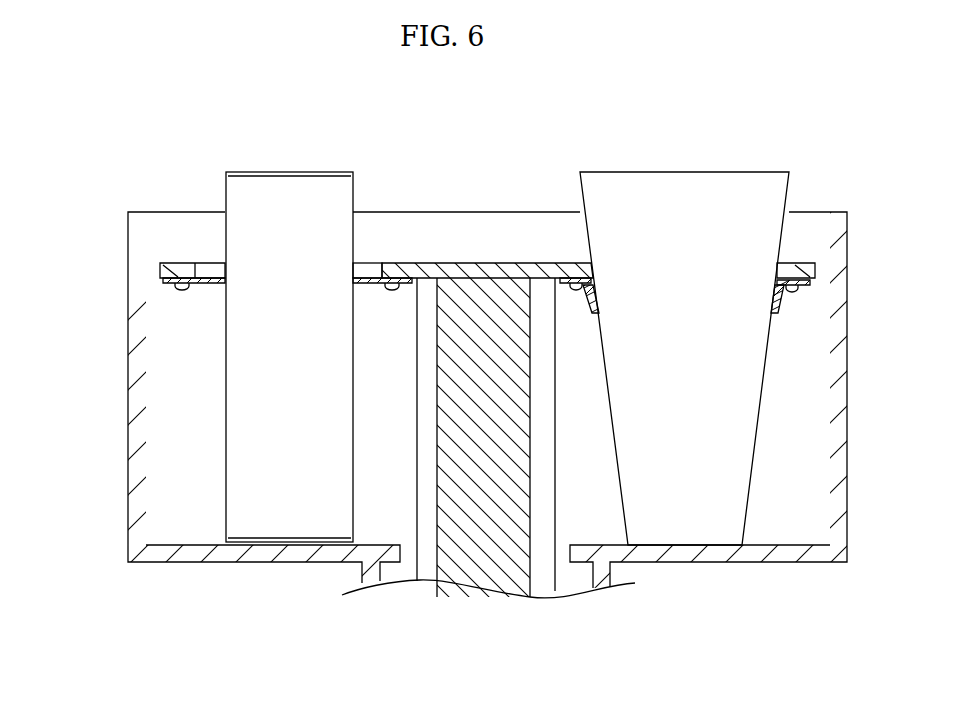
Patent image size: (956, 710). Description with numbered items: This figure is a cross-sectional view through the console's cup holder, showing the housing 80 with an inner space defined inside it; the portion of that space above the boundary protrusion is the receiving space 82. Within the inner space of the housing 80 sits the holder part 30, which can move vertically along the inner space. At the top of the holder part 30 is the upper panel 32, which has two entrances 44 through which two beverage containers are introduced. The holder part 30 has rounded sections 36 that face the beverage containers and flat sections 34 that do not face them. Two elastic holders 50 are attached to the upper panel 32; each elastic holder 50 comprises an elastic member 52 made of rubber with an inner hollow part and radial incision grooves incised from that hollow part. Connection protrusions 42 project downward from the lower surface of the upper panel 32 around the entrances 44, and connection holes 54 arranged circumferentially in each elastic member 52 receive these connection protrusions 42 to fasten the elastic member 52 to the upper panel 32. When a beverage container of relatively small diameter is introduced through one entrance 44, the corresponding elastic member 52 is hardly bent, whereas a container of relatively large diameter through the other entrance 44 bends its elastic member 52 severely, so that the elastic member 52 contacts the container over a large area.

The holder part 30 is at (473, 250).
The upper panel 32 is at (399, 270).
The flat section 34 is at (482, 566).
The rounded section 36 is at (540, 490).
The connection protrusion 42 is at (182, 286).
The entrance 44 is at (212, 270).
The elastic holder 50 is at (155, 311).
The elastic member 52 is at (173, 286).
The connection hole 54 is at (192, 277).
The housing 80 is at (112, 246).
The receiving space 82 is at (197, 410).